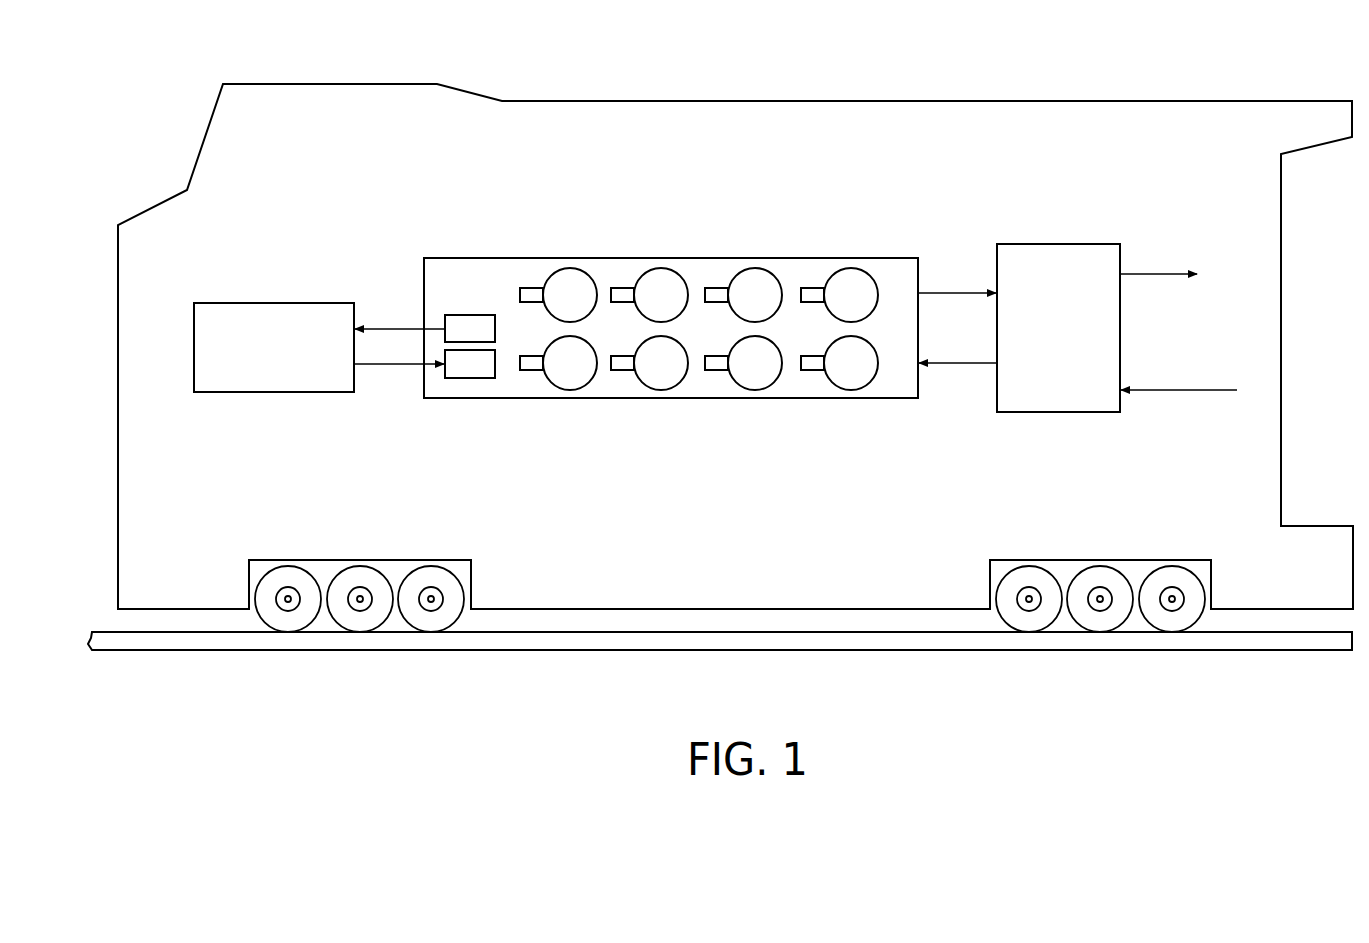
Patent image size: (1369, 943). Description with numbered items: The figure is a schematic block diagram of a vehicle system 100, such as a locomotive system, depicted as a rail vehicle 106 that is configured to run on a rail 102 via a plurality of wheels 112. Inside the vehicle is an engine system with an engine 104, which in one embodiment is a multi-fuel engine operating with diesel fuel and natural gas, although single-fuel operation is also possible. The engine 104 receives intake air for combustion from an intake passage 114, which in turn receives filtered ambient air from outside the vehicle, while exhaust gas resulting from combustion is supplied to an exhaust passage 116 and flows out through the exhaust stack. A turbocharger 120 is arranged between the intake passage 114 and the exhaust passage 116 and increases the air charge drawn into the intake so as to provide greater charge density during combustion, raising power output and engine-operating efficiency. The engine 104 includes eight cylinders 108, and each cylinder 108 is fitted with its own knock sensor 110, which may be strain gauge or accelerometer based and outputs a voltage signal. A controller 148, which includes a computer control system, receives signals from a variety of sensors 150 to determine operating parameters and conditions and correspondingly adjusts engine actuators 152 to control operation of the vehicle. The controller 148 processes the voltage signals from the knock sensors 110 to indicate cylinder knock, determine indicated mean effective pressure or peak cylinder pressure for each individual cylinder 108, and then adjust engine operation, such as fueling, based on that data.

The vehicle system 100 is at (1183, 40).
The rail 102 is at (1281, 652).
The engine 104 is at (435, 257).
The vehicle 106 is at (1028, 101).
The cylinder 108 is at (586, 306).
The knock sensor 110 is at (525, 288).
The wheels 112 is at (456, 586).
The intake passage 114 is at (1155, 392).
The exhaust passage 116 is at (1135, 276).
The turbocharger 120 is at (1075, 353).
The controller 148 is at (290, 371).
The sensors 150 is at (470, 328).
The engine actuators 152 is at (470, 364).